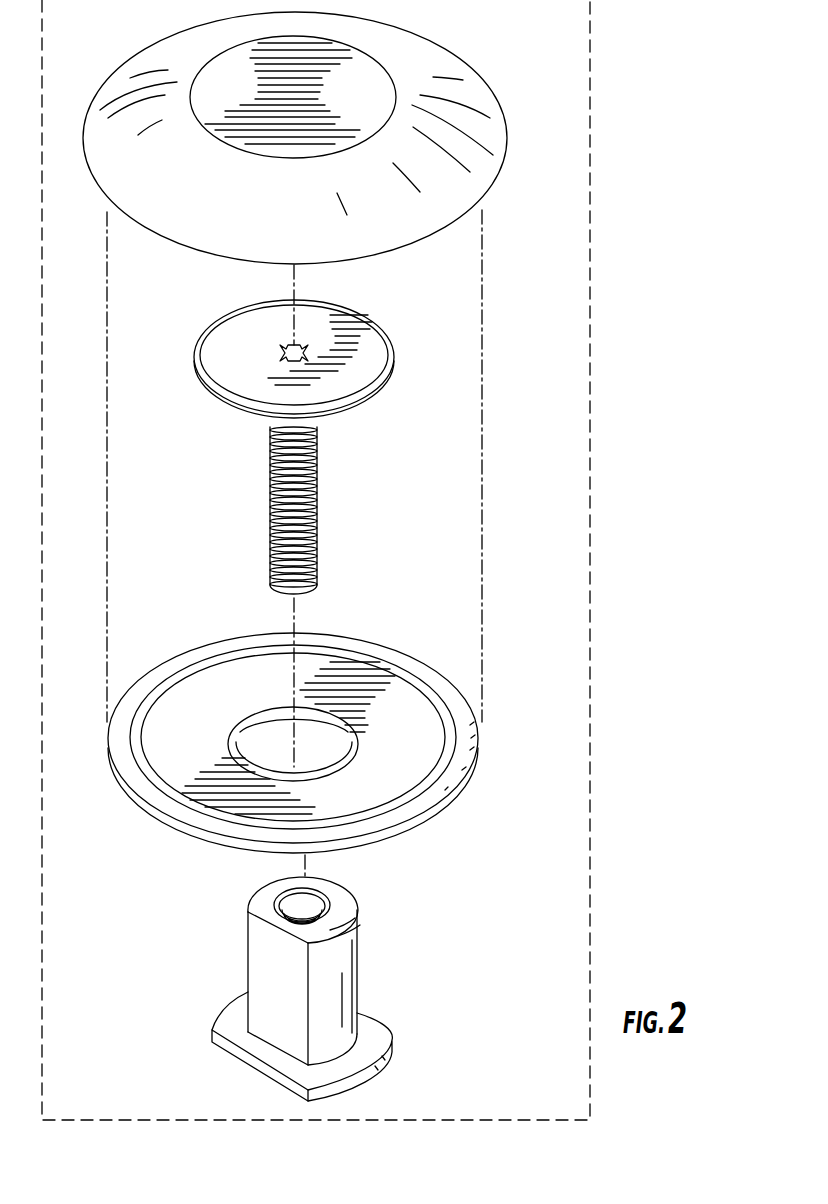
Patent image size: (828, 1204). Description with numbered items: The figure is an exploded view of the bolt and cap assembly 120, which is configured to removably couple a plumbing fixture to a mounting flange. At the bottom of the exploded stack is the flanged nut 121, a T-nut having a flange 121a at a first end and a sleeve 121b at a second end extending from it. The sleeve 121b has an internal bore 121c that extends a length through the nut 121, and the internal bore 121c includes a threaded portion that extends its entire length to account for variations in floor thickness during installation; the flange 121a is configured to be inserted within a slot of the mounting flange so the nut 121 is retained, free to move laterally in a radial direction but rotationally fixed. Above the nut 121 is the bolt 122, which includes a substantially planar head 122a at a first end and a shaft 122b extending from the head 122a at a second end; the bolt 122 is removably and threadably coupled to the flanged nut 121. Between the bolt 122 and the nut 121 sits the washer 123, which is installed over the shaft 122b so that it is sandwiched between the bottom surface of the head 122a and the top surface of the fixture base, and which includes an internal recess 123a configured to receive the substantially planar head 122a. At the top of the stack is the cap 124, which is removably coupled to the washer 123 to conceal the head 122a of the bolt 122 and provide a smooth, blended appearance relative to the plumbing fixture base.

The bolt and cap assembly 120 is at (590, 88).
The flanged nut 121 is at (321, 987).
The flange 121a is at (392, 1040).
The sleeve 121b is at (275, 957).
The internal bore 121c is at (313, 900).
The bolt 122 is at (325, 442).
The substantially planar head 122a is at (331, 326).
The shaft 122b is at (316, 567).
The washer 123 is at (325, 726).
The internal recess 123a is at (225, 695).
The cap 124 is at (460, 66).